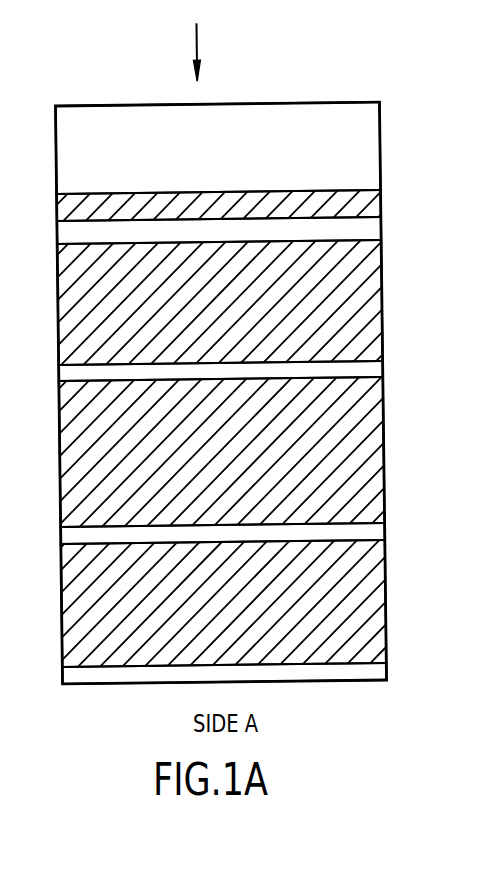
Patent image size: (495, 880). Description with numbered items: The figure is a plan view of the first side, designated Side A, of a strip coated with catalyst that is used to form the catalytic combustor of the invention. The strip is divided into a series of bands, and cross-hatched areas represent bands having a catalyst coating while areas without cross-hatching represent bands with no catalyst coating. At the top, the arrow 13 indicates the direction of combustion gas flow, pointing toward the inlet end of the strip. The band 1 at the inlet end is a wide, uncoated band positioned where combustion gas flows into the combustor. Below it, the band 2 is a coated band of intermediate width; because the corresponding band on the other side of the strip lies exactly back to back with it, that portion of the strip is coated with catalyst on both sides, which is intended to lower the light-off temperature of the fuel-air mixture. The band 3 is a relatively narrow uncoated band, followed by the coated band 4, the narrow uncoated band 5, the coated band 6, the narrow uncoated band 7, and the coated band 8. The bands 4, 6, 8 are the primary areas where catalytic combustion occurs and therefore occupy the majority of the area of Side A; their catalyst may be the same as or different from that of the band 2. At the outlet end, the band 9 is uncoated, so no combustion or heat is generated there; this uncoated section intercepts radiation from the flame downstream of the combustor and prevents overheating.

The arrow 13 is at (201, 43).
The band 1 is at (371, 141).
The band 2 is at (371, 204).
The band 3 is at (371, 230).
The band 4 is at (371, 300).
The band 5 is at (371, 366).
The band 6 is at (378, 439).
The band 7 is at (371, 528).
The band 8 is at (371, 591).
The band 9 is at (371, 668).